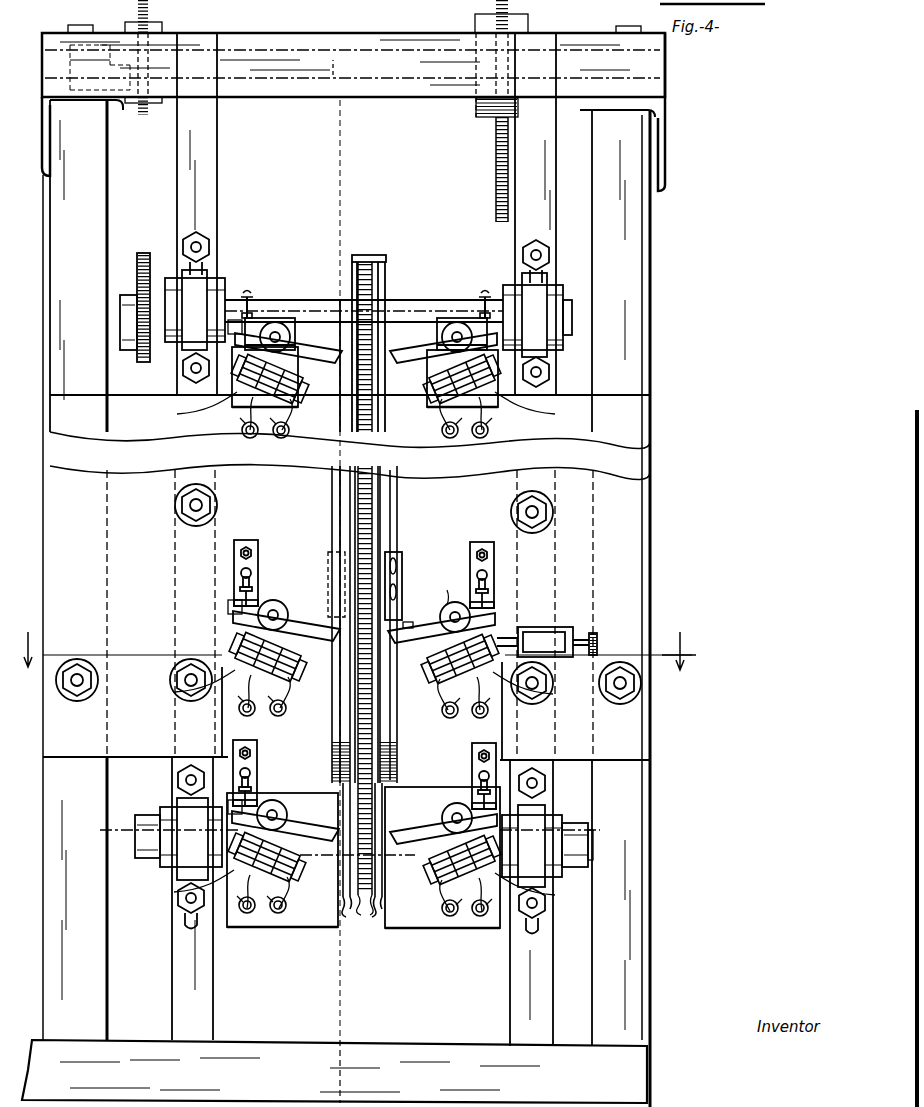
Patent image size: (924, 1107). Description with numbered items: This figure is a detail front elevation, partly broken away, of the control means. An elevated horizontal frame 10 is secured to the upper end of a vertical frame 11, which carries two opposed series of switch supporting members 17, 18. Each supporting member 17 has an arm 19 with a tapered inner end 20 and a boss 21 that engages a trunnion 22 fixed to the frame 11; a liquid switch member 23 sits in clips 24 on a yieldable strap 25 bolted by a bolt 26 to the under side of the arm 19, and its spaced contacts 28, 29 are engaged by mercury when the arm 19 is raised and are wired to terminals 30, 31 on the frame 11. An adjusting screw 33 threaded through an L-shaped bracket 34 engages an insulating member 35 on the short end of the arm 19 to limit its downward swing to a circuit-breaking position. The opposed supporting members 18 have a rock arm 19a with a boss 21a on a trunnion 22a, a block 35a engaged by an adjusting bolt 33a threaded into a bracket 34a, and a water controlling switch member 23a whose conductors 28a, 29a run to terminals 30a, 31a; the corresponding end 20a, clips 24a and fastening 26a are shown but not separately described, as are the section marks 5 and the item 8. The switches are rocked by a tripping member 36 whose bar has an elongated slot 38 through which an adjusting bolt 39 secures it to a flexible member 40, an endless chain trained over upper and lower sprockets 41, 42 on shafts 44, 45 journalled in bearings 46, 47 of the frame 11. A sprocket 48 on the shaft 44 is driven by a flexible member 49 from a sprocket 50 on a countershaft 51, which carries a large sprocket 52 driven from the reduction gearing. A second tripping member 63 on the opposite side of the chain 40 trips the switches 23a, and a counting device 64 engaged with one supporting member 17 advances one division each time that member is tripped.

The section line 5- 5 is at (358, 641).
The column 8 is at (345, 737).
The horizontally disposed frame 10 is at (652, 97).
The vertically disposed frame 11 is at (645, 357).
The switch supporting members 17 is at (419, 330).
The switch supporting members 18 is at (318, 376).
The arm 19 is at (410, 622).
The rock arm 19a is at (232, 612).
The tapered inner end 20 is at (395, 356).
The pivoted arm 20a is at (312, 356).
The boss 21 is at (452, 600).
The boss 21a is at (275, 322).
The trunnion 22 is at (457, 322).
The trunnion 22a is at (280, 322).
The liquid switch member 23 is at (435, 392).
The water controlling switch member 23a is at (232, 382).
The clips 24 is at (448, 410).
The switch contact 24a is at (292, 412).
The yieldable supporting strap 25 is at (432, 368).
The bolt 26 is at (500, 356).
The collar 26a is at (275, 915).
The contact 28 is at (478, 412).
The conductor 28a is at (283, 442).
The contact 29 is at (557, 415).
The conductor 29a is at (180, 416).
The terminal 30 is at (443, 437).
The terminal 30a is at (290, 438).
The terminal 31 is at (490, 432).
The terminal 31a is at (240, 431).
The adjusting screw 33 is at (486, 297).
The adjusting bolt 33a is at (247, 292).
The L-shaped bracket 34 is at (443, 318).
The bracket 34a is at (248, 543).
The insulating member 35 is at (507, 315).
The block 35a is at (228, 330).
The tripping member 36 is at (398, 548).
The elongated slot 38 is at (402, 590).
The adjusting bolt 39 is at (400, 560).
The flexible member 40 is at (372, 905).
The upper sprocket 41 is at (388, 283).
The lower sprocket 42 is at (350, 905).
The shaft 44 is at (120, 320).
The shaft 45 is at (593, 845).
The bearings 46 is at (212, 248).
The bearings 47 is at (160, 870).
The sprocket or pulley 48 is at (137, 350).
The flexible member 49 is at (100, 186).
The sprocket or pulley 50 is at (152, 25).
The countershaft 51 is at (338, 100).
The sprocket 52 is at (494, 182).
The tripping member 63 is at (325, 560).
The counting device 64 is at (575, 627).